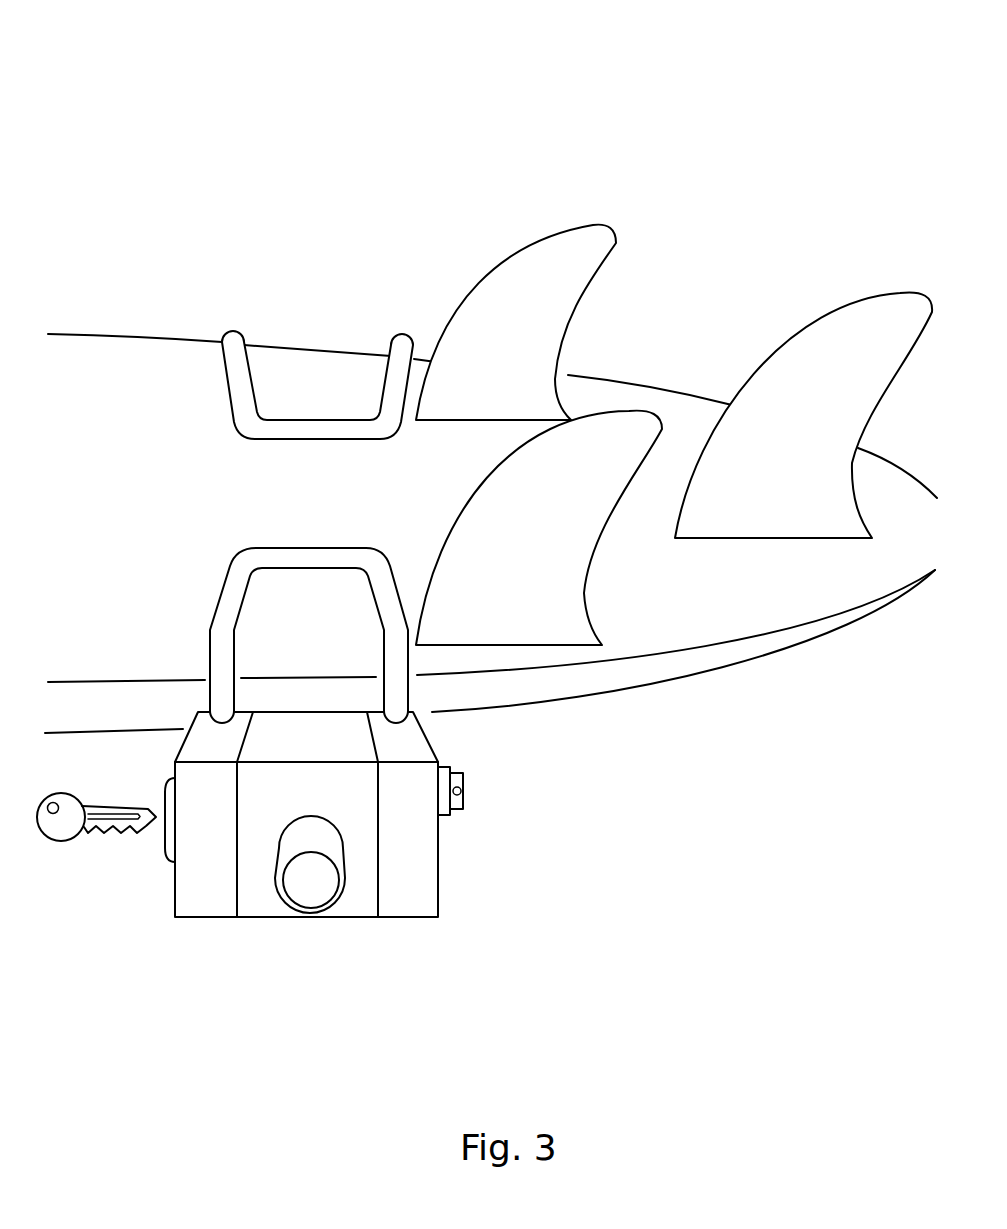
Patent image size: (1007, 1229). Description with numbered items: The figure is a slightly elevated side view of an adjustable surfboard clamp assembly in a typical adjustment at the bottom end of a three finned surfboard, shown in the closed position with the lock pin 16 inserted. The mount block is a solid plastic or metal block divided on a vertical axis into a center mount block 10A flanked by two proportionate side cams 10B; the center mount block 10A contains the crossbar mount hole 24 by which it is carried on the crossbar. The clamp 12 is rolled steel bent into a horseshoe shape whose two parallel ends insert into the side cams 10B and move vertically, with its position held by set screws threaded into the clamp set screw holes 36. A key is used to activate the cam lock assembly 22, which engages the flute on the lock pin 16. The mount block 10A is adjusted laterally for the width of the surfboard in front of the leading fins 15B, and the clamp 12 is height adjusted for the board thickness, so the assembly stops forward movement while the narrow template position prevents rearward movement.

The center mount block 10A is at (259, 905).
The side cams 10B is at (199, 903).
The clamp 12 is at (233, 548).
The surfboard fins 15B is at (827, 295).
The lock pin 16 is at (467, 791).
The cam lock assembly 22 is at (165, 857).
The crossbar mount hole 24 is at (312, 900).
The clamp set screw holes 36 is at (61, 847).